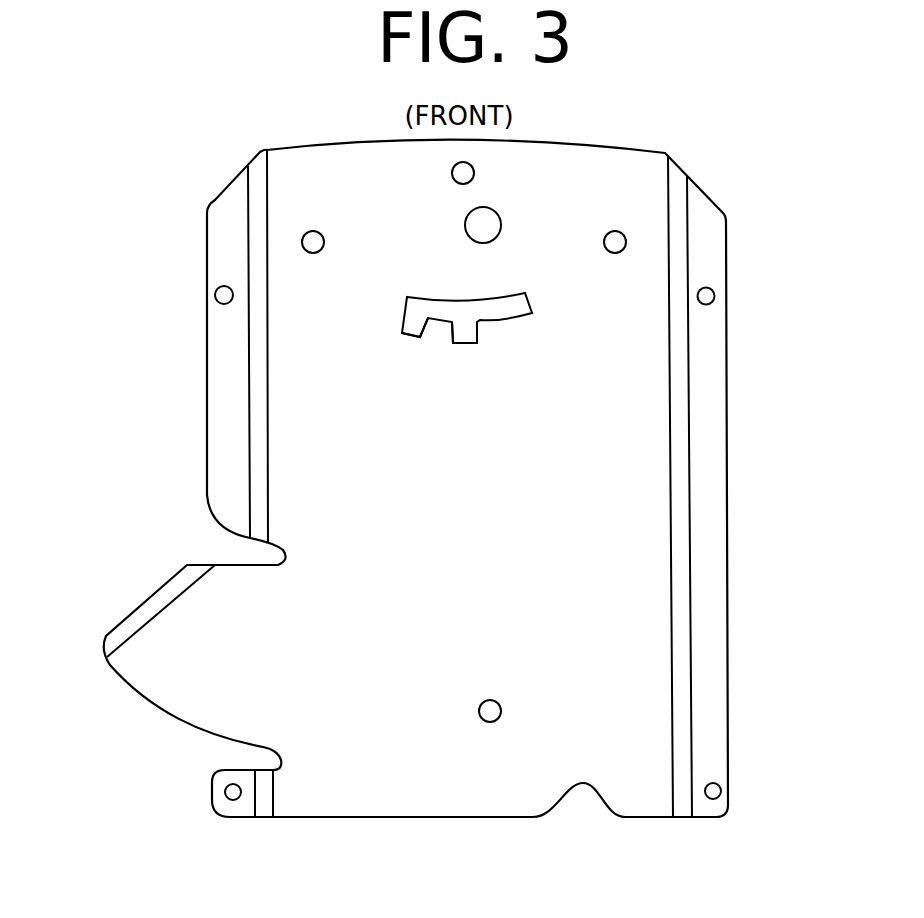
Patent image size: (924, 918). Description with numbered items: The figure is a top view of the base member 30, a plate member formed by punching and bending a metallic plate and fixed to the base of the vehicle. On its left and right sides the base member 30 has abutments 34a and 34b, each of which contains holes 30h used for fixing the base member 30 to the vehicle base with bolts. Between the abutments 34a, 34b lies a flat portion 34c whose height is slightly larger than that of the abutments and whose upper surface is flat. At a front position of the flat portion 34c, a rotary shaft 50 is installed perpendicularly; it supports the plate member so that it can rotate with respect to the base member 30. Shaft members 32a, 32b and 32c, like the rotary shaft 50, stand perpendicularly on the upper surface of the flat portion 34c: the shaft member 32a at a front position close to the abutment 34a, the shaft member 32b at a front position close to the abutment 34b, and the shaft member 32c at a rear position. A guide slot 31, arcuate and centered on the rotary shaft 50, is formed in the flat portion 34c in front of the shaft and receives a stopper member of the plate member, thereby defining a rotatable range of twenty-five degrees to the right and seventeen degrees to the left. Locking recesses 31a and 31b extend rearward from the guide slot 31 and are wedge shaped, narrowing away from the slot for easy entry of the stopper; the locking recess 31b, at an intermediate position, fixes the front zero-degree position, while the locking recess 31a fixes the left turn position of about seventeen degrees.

The base member 30 is at (763, 175).
The holes 30h is at (214, 296).
The guide slot 31 is at (437, 307).
The locking recess 31a is at (412, 336).
The locking recess 31b is at (465, 345).
The shaft member 32a is at (308, 248).
The shaft member 32b is at (612, 248).
The shaft member 32c is at (489, 700).
The abutment 34a is at (223, 415).
The abutment 34b is at (715, 575).
The flat portion 34c is at (340, 737).
The rotary shaft 50 is at (470, 168).